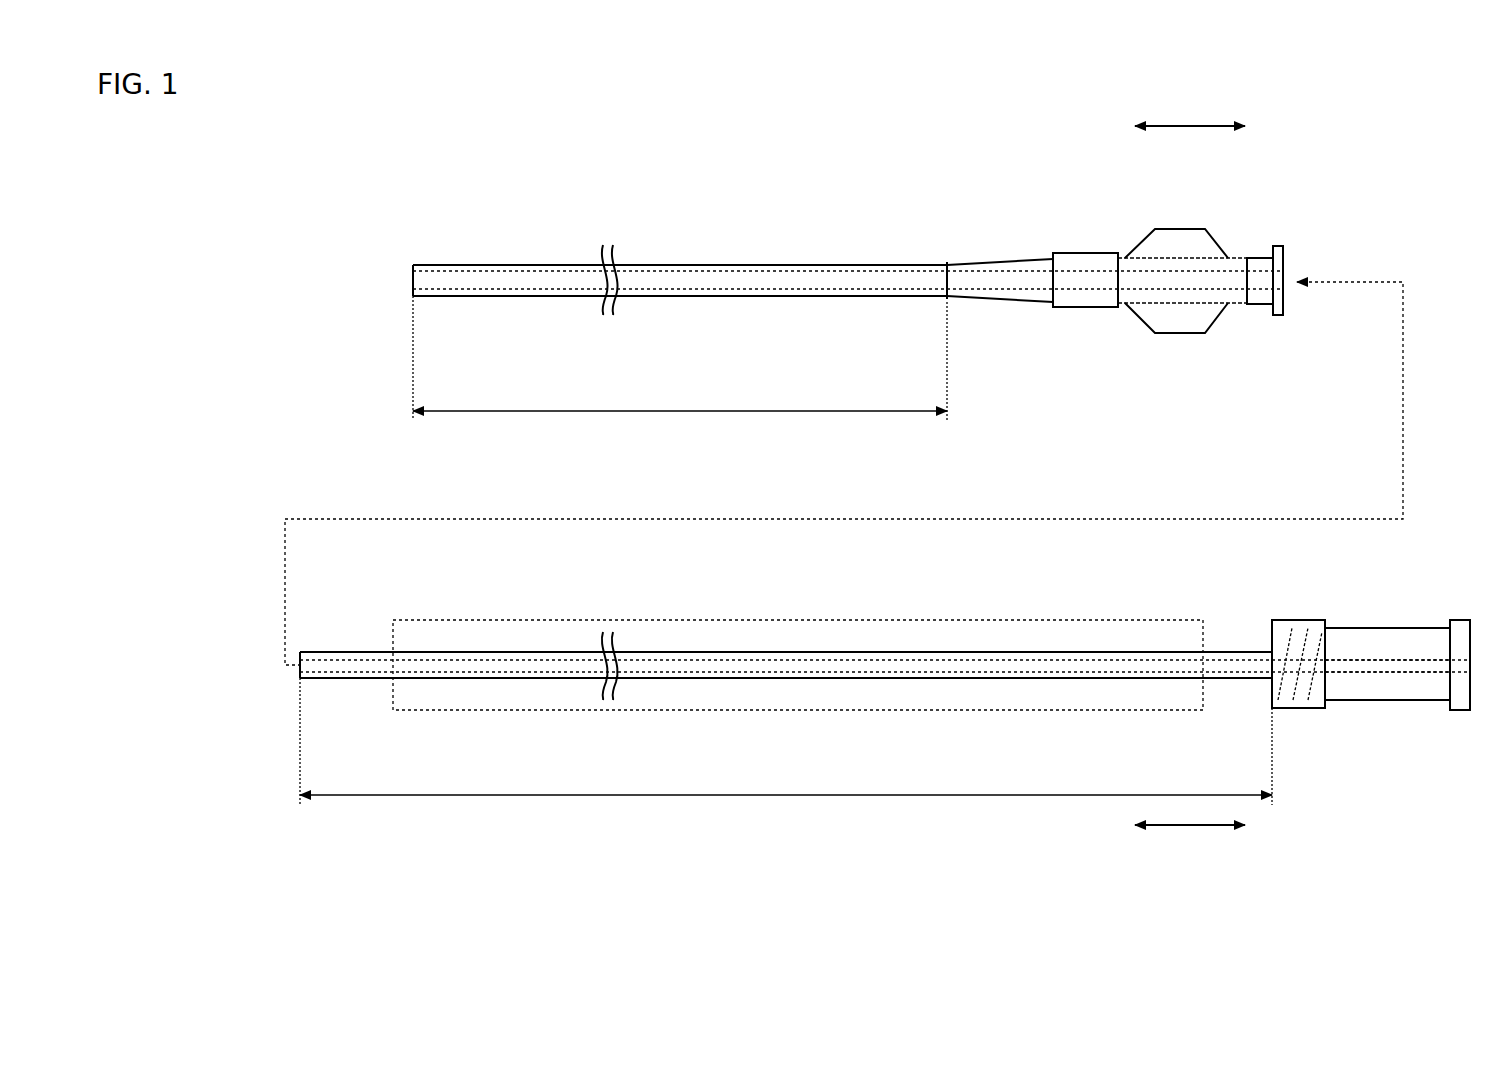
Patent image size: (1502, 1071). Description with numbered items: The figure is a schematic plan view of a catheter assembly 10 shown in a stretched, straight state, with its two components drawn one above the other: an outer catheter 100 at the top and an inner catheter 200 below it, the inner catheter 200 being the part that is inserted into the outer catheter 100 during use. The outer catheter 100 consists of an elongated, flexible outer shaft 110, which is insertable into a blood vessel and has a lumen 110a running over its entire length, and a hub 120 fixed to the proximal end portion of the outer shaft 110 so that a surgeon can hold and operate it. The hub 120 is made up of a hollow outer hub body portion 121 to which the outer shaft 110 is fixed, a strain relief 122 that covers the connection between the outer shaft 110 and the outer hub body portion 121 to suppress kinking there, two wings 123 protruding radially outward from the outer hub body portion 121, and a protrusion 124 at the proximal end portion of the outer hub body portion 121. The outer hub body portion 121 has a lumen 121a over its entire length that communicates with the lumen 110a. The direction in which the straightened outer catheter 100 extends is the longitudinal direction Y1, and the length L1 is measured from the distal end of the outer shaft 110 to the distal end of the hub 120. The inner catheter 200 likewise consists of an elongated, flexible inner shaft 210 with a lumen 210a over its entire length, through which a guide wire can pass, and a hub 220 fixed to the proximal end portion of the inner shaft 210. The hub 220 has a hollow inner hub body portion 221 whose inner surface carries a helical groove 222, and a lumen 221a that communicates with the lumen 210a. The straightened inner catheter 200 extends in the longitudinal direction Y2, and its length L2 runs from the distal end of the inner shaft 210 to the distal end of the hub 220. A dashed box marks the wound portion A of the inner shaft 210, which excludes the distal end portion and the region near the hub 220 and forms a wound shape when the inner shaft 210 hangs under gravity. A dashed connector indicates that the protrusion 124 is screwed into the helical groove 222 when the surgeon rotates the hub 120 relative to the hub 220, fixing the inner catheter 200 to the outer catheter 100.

The catheter assembly 10 is at (352, 113).
The outer catheter 100 is at (510, 245).
The outer shaft 110 is at (545, 298).
The lumen 110a is at (838, 263).
The hub 120 is at (1250, 340).
The outer hub body portion 121 is at (1225, 238).
The lumen 121a is at (1130, 250).
The strain relief 122 is at (1005, 305).
The wings 123 is at (1170, 228).
The protrusion 124 is at (1285, 240).
The inner catheter 200 is at (370, 622).
The inner shaft 210 is at (665, 678).
The lumen 210a is at (838, 650).
The hub 220 is at (1357, 722).
The inner hub body portion 221 is at (1350, 628).
The lumen 221a is at (1395, 680).
The helical groove 222 is at (1285, 618).
The wound portion A is at (968, 618).
The length of the outer shaft L1 is at (680, 358).
The length of the inner shaft L2 is at (786, 741).
The longitudinal direction Y1 is at (1190, 105).
The longitudinal direction Y2 is at (1190, 843).